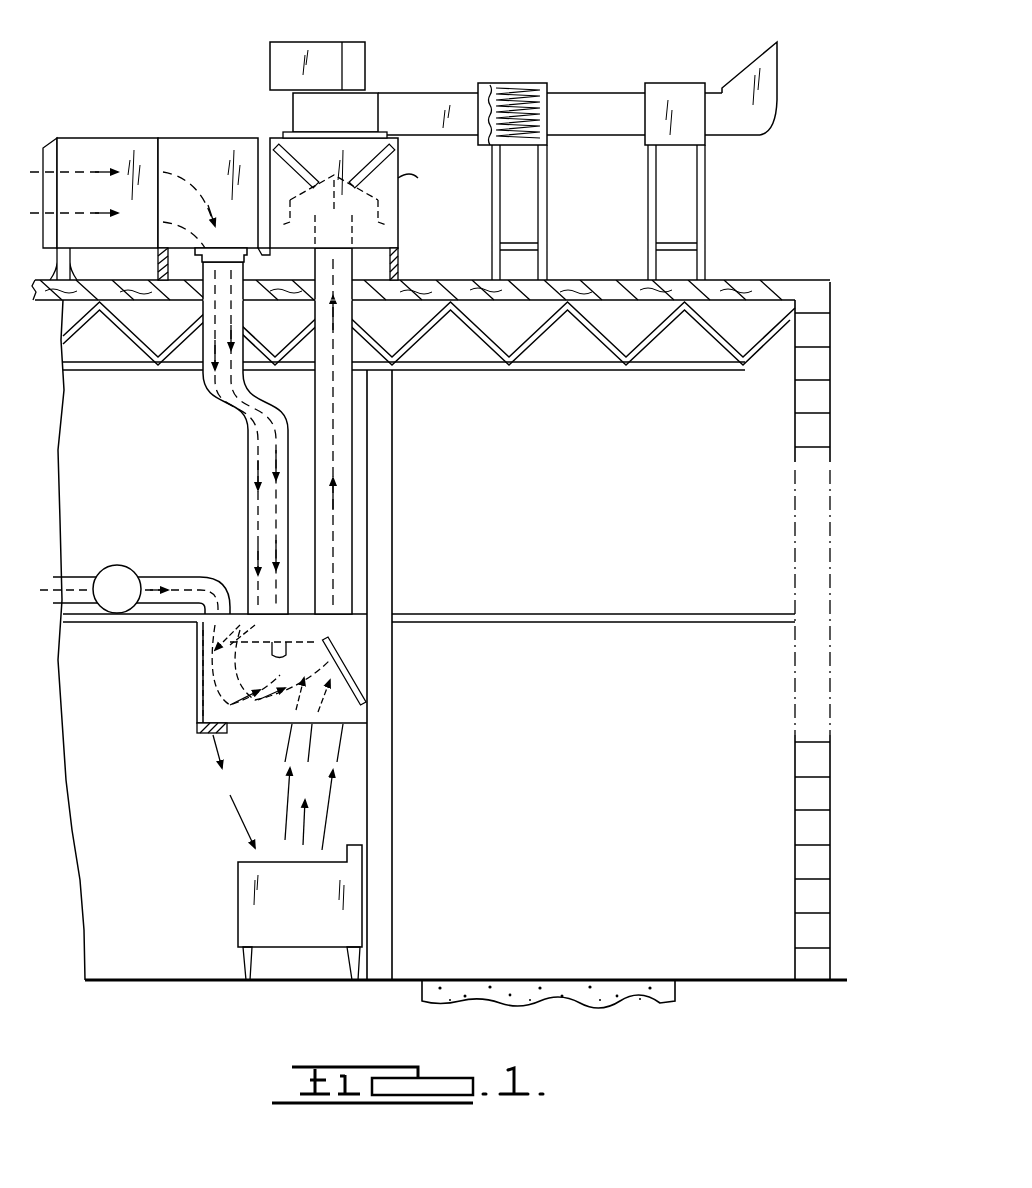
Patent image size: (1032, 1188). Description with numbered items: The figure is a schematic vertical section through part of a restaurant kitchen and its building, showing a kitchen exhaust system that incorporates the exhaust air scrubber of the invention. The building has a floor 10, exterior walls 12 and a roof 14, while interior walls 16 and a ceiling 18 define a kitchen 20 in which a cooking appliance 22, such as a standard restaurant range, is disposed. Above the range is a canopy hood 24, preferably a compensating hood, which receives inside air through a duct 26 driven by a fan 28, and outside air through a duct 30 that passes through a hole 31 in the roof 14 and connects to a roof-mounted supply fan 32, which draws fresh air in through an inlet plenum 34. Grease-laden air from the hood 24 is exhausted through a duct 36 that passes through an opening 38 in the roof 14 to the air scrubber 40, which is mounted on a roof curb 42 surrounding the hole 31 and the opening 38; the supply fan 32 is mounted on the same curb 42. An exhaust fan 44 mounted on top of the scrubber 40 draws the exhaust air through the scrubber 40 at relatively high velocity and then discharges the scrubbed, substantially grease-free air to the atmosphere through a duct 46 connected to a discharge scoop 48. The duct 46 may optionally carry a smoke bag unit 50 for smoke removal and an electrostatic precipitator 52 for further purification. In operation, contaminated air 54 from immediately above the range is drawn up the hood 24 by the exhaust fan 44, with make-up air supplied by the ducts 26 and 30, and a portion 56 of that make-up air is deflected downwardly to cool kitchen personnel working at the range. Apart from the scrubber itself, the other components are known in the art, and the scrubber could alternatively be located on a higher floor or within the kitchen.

The floor 10 is at (538, 1000).
The exterior walls 12 is at (803, 763).
The roof 14 is at (750, 285).
The interior walls 16 is at (395, 760).
The ceiling 18 is at (142, 622).
The kitchen 20 is at (167, 805).
The cooking appliance 22 is at (320, 917).
The canopy hood 24 is at (358, 653).
The duct 26 is at (192, 580).
The fan 28 is at (115, 572).
The duct 30 is at (266, 462).
The hole 31 is at (232, 294).
The supply fan 32 is at (195, 146).
The inlet plenum 34 is at (108, 146).
The duct 36 is at (343, 385).
The opening 38 is at (350, 294).
The air scrubber 40 is at (398, 180).
The roof curb 42 is at (300, 274).
The exhaust fan 44 is at (310, 110).
The duct 46 is at (593, 110).
The discharge scoop 48 is at (770, 82).
The smoke bag unit 50 is at (517, 90).
The electrostatic precipitator 52 is at (680, 92).
The contaminated air 54 is at (302, 824).
The portion 56 is at (236, 800).